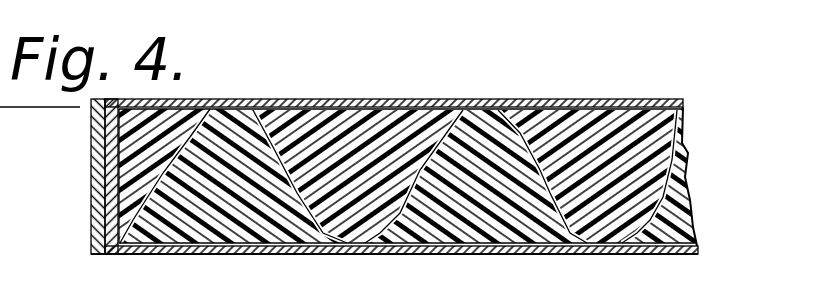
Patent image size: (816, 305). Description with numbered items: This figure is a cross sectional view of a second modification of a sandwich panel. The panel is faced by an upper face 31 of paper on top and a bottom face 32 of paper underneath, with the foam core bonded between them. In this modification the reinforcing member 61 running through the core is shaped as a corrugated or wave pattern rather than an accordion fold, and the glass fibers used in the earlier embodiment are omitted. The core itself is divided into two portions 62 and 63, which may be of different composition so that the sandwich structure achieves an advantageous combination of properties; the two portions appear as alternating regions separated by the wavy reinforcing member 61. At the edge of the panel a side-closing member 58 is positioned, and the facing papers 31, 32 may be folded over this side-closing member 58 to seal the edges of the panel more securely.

The upper face 31 is at (360, 103).
The bottom face 32 is at (436, 254).
The side-closing member 58 is at (118, 208).
The reinforcing member 61 is at (293, 212).
The portion of the foam core 62 is at (220, 255).
The portion of the foam core 63 is at (214, 87).